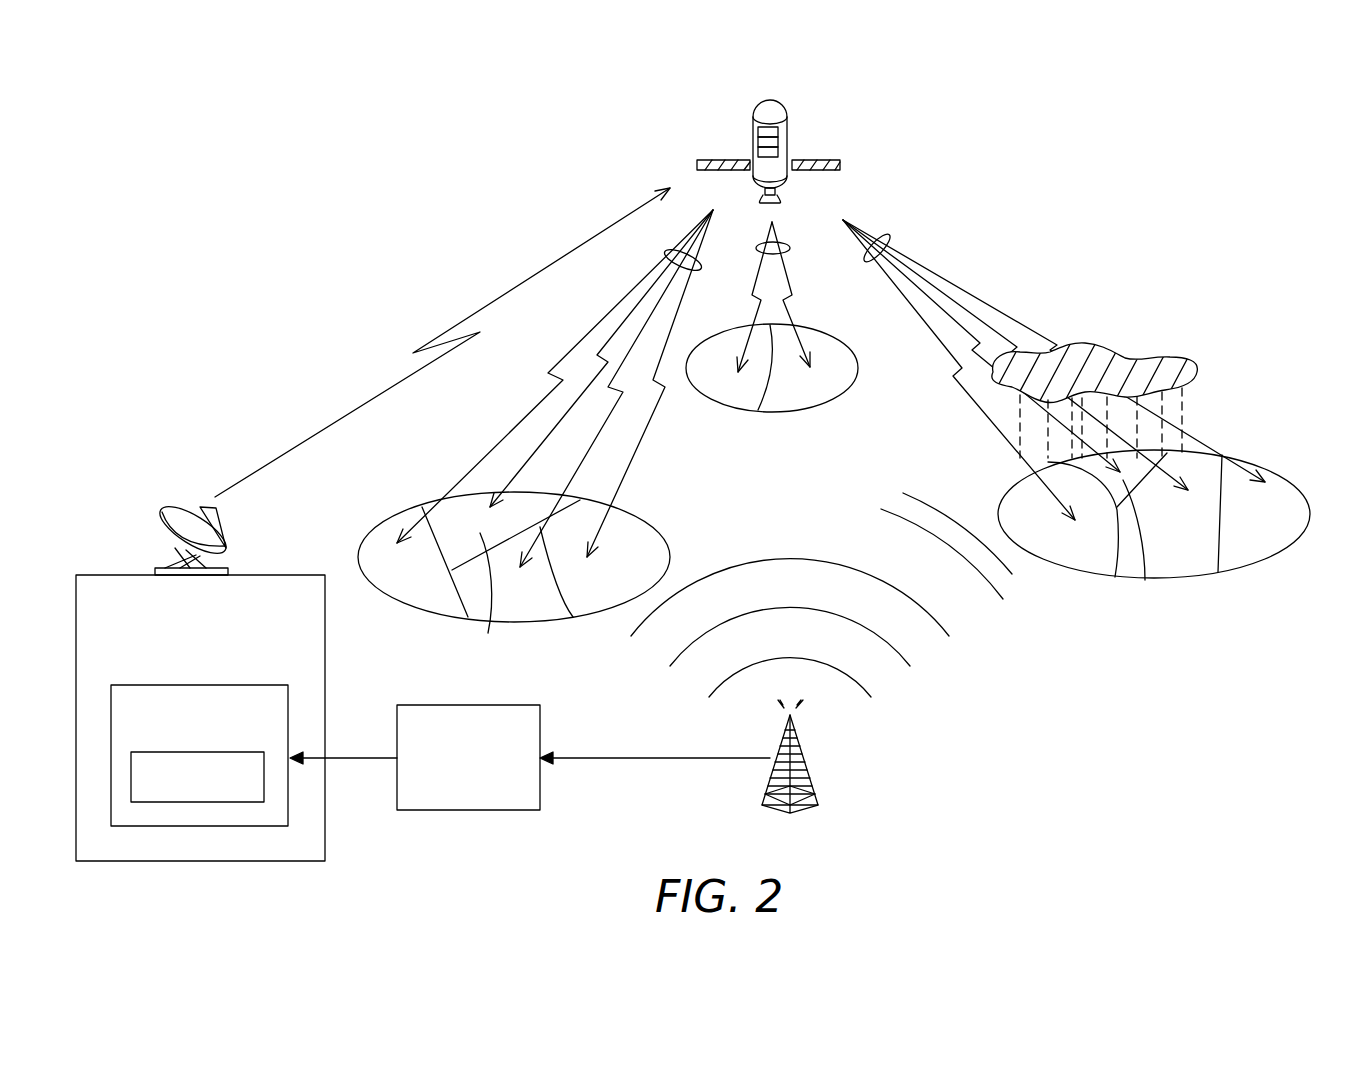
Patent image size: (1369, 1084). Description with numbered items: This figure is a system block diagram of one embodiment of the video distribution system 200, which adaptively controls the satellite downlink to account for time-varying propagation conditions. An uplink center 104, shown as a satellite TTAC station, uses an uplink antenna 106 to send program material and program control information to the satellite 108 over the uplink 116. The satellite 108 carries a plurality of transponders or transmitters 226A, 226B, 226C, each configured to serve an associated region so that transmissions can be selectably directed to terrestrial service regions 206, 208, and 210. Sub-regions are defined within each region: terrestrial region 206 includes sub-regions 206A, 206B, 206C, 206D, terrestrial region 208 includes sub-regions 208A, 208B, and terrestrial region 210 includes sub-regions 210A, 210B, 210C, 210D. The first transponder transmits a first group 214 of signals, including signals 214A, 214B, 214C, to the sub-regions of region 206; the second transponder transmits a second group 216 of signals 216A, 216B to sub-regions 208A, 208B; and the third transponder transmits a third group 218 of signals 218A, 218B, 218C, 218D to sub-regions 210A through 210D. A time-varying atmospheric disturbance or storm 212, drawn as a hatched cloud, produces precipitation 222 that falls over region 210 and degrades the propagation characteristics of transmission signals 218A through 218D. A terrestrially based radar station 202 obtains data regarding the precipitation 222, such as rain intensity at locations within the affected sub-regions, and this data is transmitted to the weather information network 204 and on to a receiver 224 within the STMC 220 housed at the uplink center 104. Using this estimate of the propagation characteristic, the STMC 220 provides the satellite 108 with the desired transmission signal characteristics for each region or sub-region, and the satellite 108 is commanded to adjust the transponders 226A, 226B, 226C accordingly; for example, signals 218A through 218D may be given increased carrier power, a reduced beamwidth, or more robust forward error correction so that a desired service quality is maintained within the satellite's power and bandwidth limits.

The uplink center 104 is at (257, 573).
The uplink antenna 106 is at (160, 527).
The satellite 108 is at (780, 122).
The uplink 116 is at (548, 262).
The video distribution system 200 is at (1110, 232).
The terrestrially based radar station 202 is at (815, 783).
The weather information network 204 is at (468, 812).
The terrestrial service region 206 is at (402, 510).
The sub-region 206A is at (413, 587).
The sub-region 206B is at (528, 608).
The sub-region 206C is at (652, 520).
The sub-region 206D is at (516, 583).
The terrestrial service region 208 is at (858, 372).
The sub-region 208A is at (740, 392).
The sub-region 208B is at (800, 390).
The terrestrial service region 210 is at (1283, 500).
The sub-region 210A is at (1080, 540).
The sub-region 210B is at (1140, 565).
The sub-region 210C is at (1187, 548).
The sub-region 210D is at (1260, 530).
The atmospheric disturbance 212 is at (1132, 378).
The first group of signals 214 is at (662, 254).
The transmission signal 214A is at (537, 400).
The transmission signal 214B is at (537, 442).
The transmission signal 214C is at (565, 478).
The second group of signals 216 is at (810, 222).
The transmission signal 216A is at (758, 268).
The transmission signal 216B is at (778, 266).
The third group of signals 218 is at (884, 240).
The transmission signal 218A is at (903, 298).
The transmission signal 218B is at (912, 270).
The transmission signal 218C is at (948, 298).
The transmission signal 218D is at (988, 318).
The STMC 220 is at (290, 803).
The precipitation 222 is at (1183, 408).
The receiver 224 is at (165, 800).
The transponder 226A is at (758, 128).
The transponder 226B is at (758, 141).
The transponder 226C is at (758, 152).